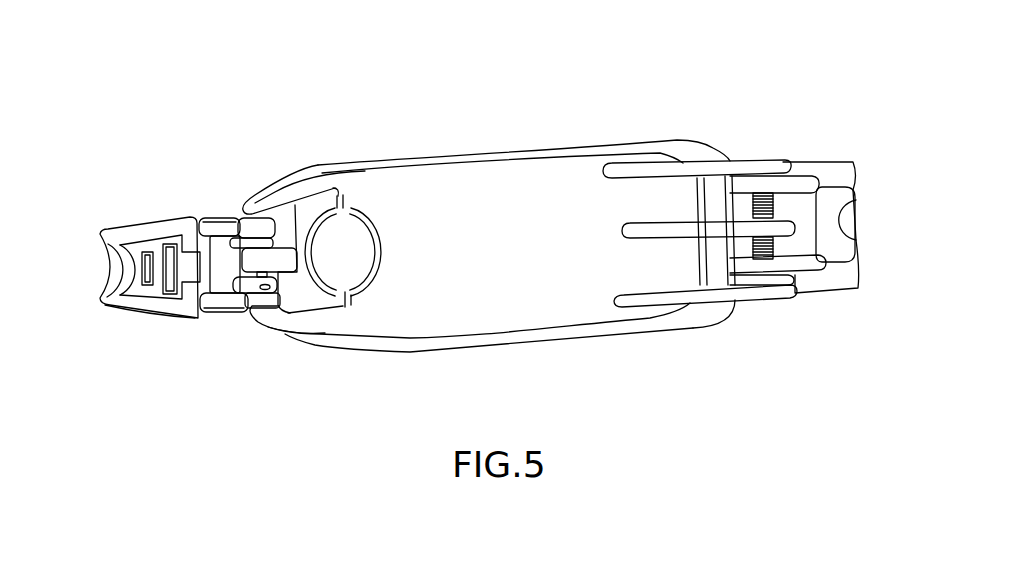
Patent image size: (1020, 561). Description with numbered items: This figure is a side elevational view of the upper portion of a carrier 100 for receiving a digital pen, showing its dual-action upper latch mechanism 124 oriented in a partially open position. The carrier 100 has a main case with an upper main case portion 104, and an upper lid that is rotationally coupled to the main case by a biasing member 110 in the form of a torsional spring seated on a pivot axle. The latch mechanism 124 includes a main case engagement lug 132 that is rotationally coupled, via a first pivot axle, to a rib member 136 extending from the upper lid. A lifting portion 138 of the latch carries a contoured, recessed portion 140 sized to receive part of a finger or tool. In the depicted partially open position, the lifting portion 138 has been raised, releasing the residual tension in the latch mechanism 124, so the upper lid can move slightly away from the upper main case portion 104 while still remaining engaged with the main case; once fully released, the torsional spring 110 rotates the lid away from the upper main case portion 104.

The carrier 100 is at (698, 71).
The upper main case portion 104 is at (455, 157).
The biasing member 110 is at (780, 208).
The upper latch mechanism 124 is at (170, 215).
The main case engagement lug 132 is at (245, 232).
The rib member 136 is at (286, 256).
The lifting portion 138 is at (137, 317).
The contoured, recessed portion 140 is at (342, 250).